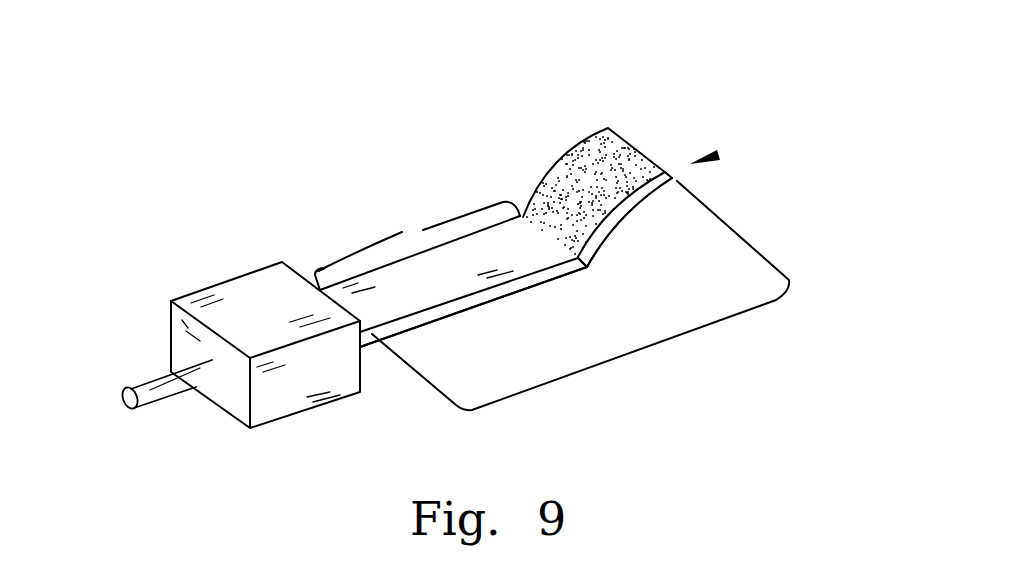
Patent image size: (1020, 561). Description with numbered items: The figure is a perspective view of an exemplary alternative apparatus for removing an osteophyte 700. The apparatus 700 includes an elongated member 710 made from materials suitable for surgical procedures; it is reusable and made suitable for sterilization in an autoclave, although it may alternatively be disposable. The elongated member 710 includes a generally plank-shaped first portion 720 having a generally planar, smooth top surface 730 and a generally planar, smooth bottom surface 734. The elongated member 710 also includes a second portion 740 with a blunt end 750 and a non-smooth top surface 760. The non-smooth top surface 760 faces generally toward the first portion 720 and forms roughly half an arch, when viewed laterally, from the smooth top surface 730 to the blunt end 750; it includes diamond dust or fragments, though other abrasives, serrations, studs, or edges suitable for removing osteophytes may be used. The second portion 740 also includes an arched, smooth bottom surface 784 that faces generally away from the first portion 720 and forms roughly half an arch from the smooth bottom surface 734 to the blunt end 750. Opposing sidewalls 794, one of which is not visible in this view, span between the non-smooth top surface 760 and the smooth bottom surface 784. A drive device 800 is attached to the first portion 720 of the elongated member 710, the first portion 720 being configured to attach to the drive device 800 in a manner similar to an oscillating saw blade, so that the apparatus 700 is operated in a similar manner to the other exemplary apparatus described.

The apparatus for removing an osteophyte 700 is at (216, 106).
The elongated member 710 is at (618, 351).
The first portion 720 is at (423, 230).
The smooth top surface 730 is at (455, 294).
The smooth bottom surface 734 is at (485, 323).
The second portion 740 is at (608, 127).
The blunt end 750 is at (712, 156).
The non-smooth top surface 760 is at (611, 133).
The smooth bottom surface 784 is at (633, 241).
The sidewalls 794 is at (627, 198).
The drive device 800 is at (207, 287).